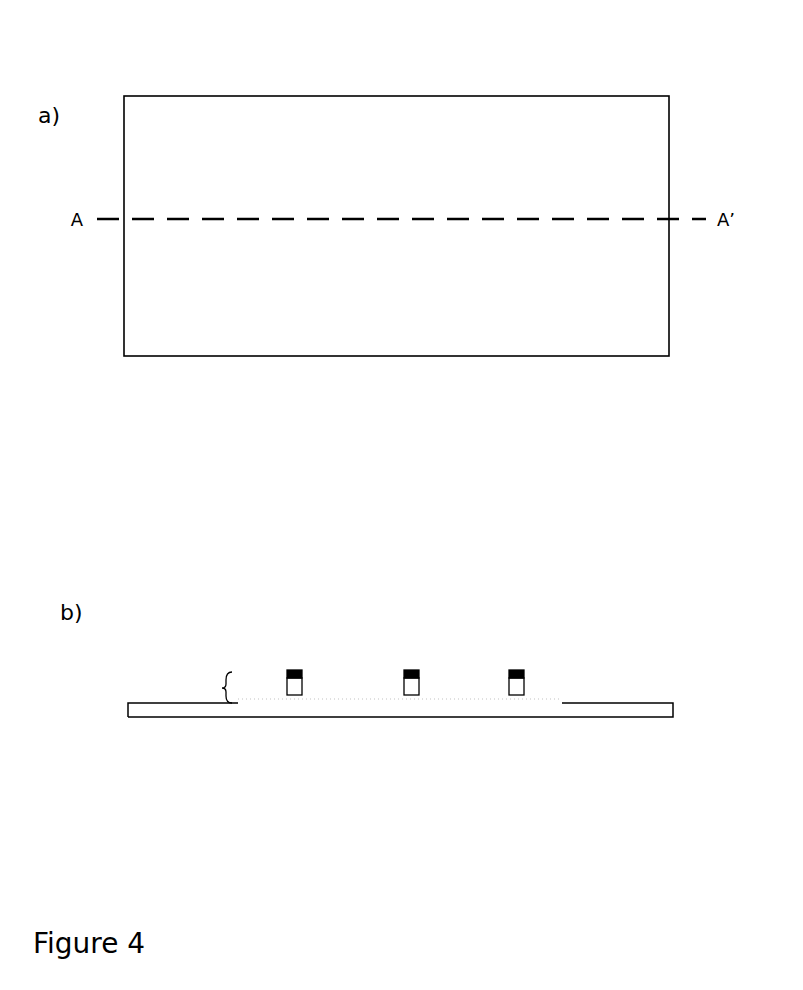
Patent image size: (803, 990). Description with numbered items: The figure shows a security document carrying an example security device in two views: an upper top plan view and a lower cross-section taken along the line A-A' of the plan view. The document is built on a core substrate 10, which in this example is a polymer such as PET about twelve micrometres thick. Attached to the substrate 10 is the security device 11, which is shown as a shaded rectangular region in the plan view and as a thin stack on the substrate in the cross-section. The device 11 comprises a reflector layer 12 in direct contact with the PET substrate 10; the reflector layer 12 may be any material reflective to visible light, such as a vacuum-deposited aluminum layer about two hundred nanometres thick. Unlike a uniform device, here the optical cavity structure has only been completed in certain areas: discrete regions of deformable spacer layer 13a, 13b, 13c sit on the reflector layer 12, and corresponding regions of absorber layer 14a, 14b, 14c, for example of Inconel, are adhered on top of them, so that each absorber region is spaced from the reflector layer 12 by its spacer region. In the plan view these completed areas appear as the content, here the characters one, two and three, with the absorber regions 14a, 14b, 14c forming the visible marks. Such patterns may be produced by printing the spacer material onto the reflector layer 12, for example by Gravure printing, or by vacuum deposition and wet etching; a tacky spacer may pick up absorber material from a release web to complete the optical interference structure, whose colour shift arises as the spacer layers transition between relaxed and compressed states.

The core substrate 10 is at (658, 138).
The security device 11 is at (275, 340).
The reflector layer 12 is at (562, 695).
The deformable spacer layer 13a is at (287, 688).
The deformable spacer layer 13b is at (404, 688).
The deformable spacer layer 13c is at (509, 688).
The absorber layer 14a is at (293, 160).
The absorber layer 14b is at (395, 162).
The absorber layer 14c is at (497, 162).